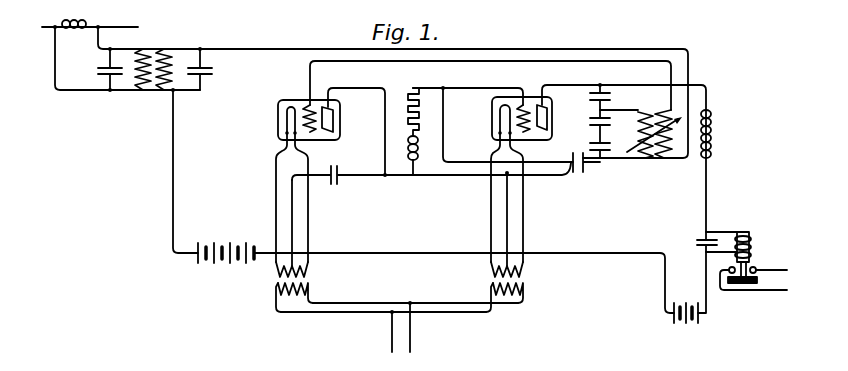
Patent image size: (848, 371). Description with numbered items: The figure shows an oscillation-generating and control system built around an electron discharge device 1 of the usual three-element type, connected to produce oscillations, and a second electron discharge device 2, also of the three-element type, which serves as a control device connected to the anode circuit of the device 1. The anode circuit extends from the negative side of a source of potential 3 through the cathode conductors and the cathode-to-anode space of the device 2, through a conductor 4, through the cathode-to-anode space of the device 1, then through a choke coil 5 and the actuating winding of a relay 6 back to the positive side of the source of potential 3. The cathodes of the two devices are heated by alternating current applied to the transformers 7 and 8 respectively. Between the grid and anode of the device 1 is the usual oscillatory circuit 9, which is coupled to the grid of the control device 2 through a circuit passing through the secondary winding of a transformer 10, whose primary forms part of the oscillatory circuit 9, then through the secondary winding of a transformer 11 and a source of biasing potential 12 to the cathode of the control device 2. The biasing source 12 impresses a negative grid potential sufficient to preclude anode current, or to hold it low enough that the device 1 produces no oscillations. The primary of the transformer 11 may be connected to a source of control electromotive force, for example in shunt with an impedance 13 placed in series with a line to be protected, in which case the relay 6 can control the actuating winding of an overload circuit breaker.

The electron discharge device 1 is at (534, 97).
The second electron discharge device 2 is at (298, 103).
The source of potential 3 is at (681, 304).
The conductor 4 is at (447, 178).
The choke coil 5 is at (712, 120).
The relay 6 is at (750, 238).
The transformer 7 is at (490, 277).
The transformer 8 is at (310, 270).
The oscillatory circuit 9 is at (637, 135).
The transformer 10 is at (657, 162).
The transformer 11 is at (156, 92).
The source of biasing potential 12 is at (221, 248).
The impedance 13 is at (78, 33).